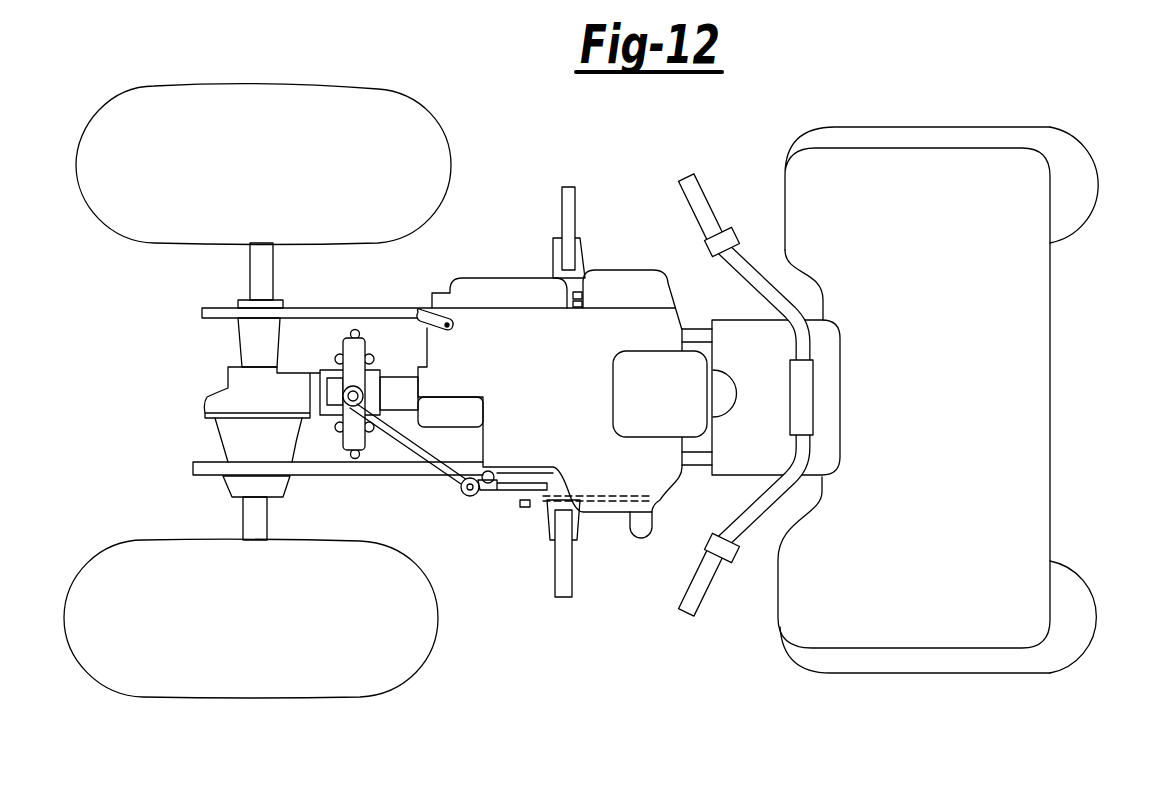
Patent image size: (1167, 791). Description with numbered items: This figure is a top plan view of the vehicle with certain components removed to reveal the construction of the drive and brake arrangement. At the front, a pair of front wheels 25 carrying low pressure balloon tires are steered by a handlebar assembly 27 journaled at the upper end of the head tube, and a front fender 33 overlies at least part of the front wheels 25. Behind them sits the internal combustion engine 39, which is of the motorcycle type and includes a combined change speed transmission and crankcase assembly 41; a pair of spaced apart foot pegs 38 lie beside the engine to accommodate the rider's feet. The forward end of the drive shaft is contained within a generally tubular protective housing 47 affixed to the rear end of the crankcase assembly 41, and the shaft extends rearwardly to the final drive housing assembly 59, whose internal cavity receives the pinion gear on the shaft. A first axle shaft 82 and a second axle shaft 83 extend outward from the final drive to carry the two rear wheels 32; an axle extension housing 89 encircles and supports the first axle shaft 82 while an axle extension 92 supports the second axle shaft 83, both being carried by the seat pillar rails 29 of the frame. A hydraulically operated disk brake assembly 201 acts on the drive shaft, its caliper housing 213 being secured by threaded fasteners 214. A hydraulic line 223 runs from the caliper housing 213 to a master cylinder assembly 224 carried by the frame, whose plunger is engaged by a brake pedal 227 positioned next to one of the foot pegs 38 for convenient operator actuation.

The rear wheels 32 is at (347, 100).
The first axle shaft 82 is at (250, 270).
The second axle shaft 83 is at (250, 522).
The axle extension housing 89 is at (243, 341).
The final drive housing assembly 59 is at (208, 393).
The axle extension 92 is at (230, 446).
The seat pillar rails 29 is at (333, 314).
The hydraulically operated disk brake assembly 201 is at (365, 330).
The threaded fasteners 214 is at (350, 335).
The caliper housing 213 is at (361, 352).
The protective housing 47 is at (398, 388).
The crankcase assembly 41 is at (507, 337).
The foot pegs 38 is at (572, 198).
The internal combustion engine 39 is at (622, 398).
The handlebar assembly 27 is at (743, 253).
The hydraulic line 223 is at (414, 452).
The master cylinder assembly 224 is at (473, 497).
The brake pedal 227 is at (632, 503).
The front wheels 25 is at (1090, 180).
The front fender 33 is at (1045, 386).